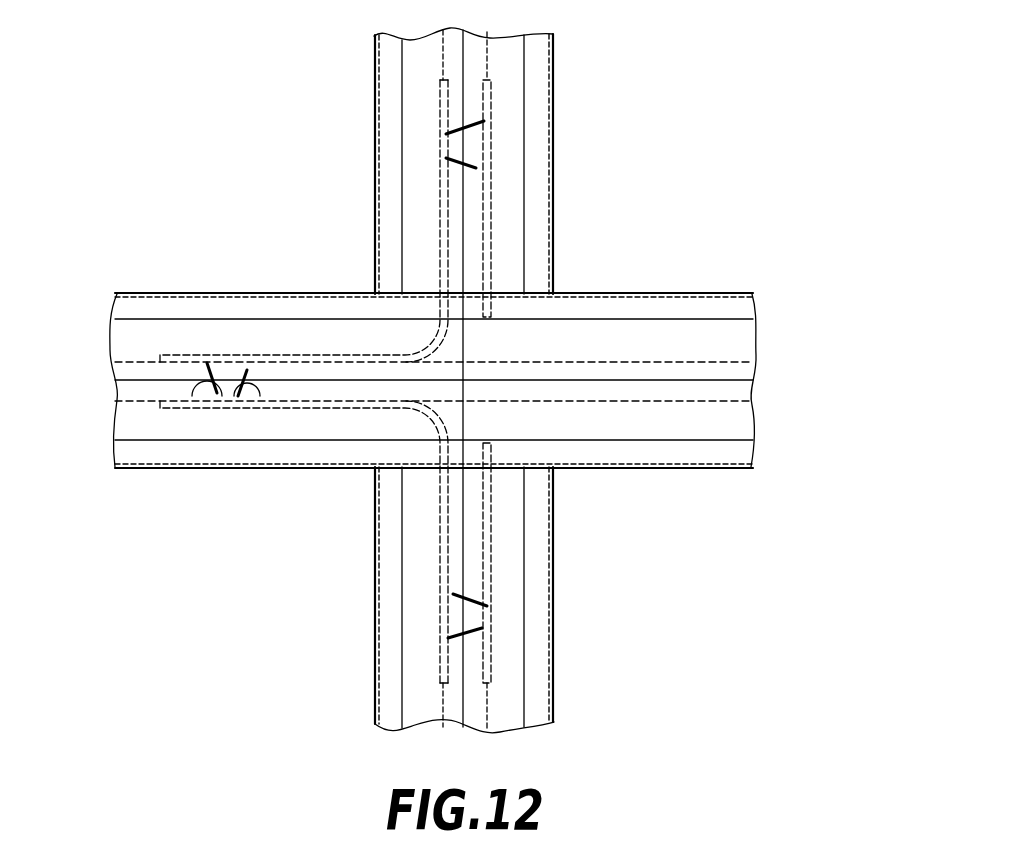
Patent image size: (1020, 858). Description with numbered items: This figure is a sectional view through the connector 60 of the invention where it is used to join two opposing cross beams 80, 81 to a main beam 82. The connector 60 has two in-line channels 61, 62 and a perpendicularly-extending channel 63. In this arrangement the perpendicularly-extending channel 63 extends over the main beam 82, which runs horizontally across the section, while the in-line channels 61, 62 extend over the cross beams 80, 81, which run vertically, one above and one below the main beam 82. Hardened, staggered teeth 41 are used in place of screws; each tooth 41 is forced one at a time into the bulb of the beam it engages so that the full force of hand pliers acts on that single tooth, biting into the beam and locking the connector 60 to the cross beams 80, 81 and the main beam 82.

The teeth 41 is at (477, 128).
The connector 60 is at (502, 192).
The channel 61 is at (488, 95).
The channel 62 is at (497, 668).
The perpendicularly-extending channel 63 is at (172, 354).
The cross beam 80 is at (554, 560).
The cross beam 81 is at (553, 130).
The main beam 82 is at (644, 292).